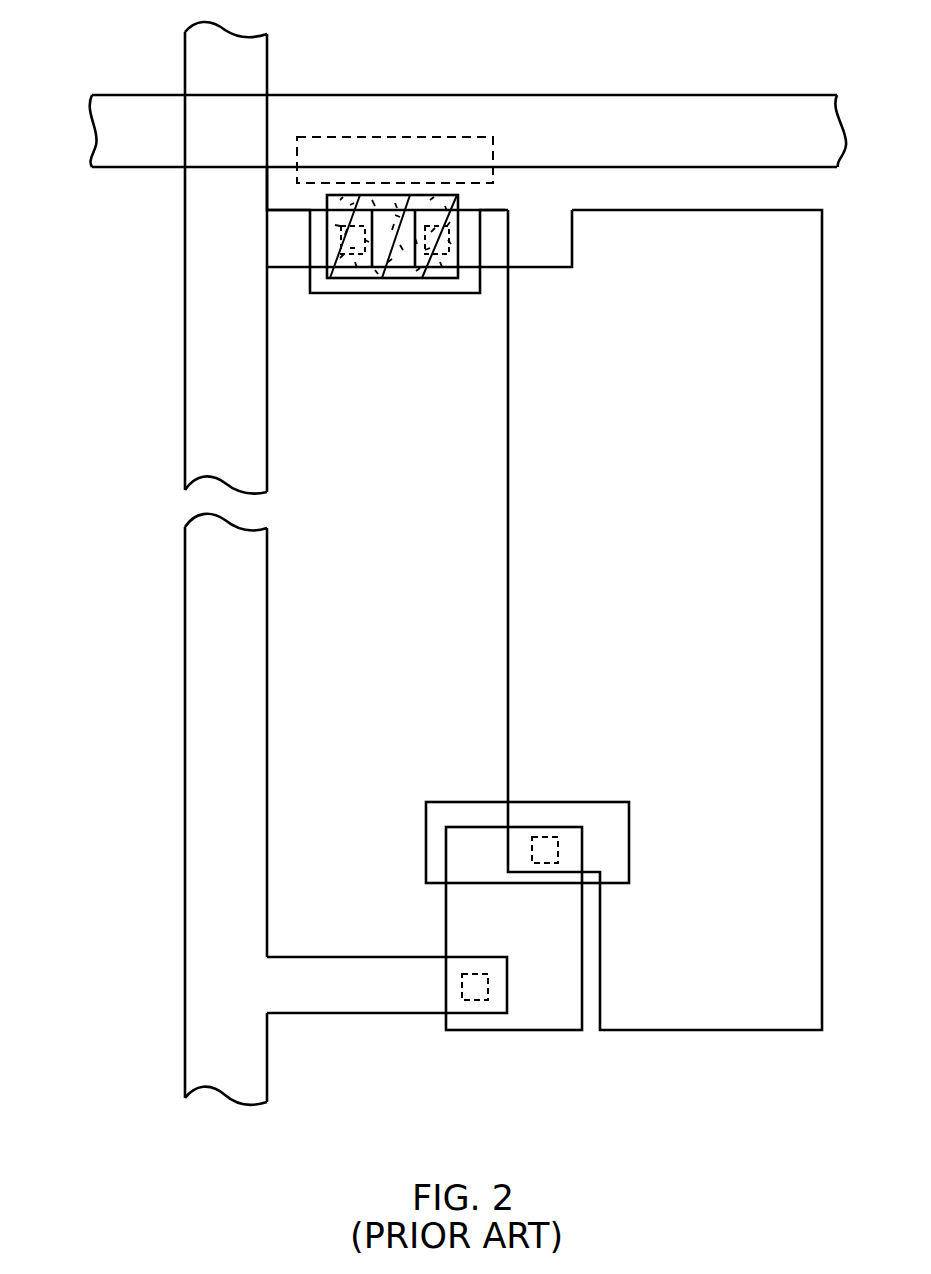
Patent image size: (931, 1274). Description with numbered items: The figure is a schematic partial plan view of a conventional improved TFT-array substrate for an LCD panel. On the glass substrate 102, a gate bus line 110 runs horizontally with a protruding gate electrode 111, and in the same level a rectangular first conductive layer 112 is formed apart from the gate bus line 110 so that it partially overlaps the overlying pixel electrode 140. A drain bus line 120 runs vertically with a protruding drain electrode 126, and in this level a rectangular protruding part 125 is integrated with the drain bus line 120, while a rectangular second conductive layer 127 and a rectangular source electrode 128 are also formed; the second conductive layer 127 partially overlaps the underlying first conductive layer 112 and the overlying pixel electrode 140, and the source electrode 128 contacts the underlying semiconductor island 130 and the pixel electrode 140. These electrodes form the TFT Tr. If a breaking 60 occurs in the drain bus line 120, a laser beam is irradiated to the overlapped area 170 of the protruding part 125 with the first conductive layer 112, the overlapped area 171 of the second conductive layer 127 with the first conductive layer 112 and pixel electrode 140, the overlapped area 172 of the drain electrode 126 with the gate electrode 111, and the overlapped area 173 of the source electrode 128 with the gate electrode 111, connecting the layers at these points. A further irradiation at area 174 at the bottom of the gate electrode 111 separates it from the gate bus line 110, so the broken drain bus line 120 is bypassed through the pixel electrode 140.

The gate bus line 110 is at (733, 110).
The drain bus line 120 is at (197, 303).
The breaking or disconnection 60 is at (180, 508).
The glass substrate 102 is at (403, 567).
The drain electrode 126 is at (278, 260).
The semiconductor island 130 is at (383, 282).
The gate electrode 111 is at (450, 293).
The source electrode 128 is at (490, 258).
The area at the bottom of the gate electrode 174 is at (388, 147).
The overlapped area 172 is at (353, 277).
The overlapped area 173 is at (467, 273).
The TFT Tr is at (512, 192).
The pixel electrode 140 is at (725, 1023).
The second conductive layer 127 is at (458, 808).
The first conductive layer 112 is at (513, 1027).
The overlapped area 171 is at (545, 835).
The protruding part 125 is at (329, 1008).
The overlapped area 170 is at (477, 973).